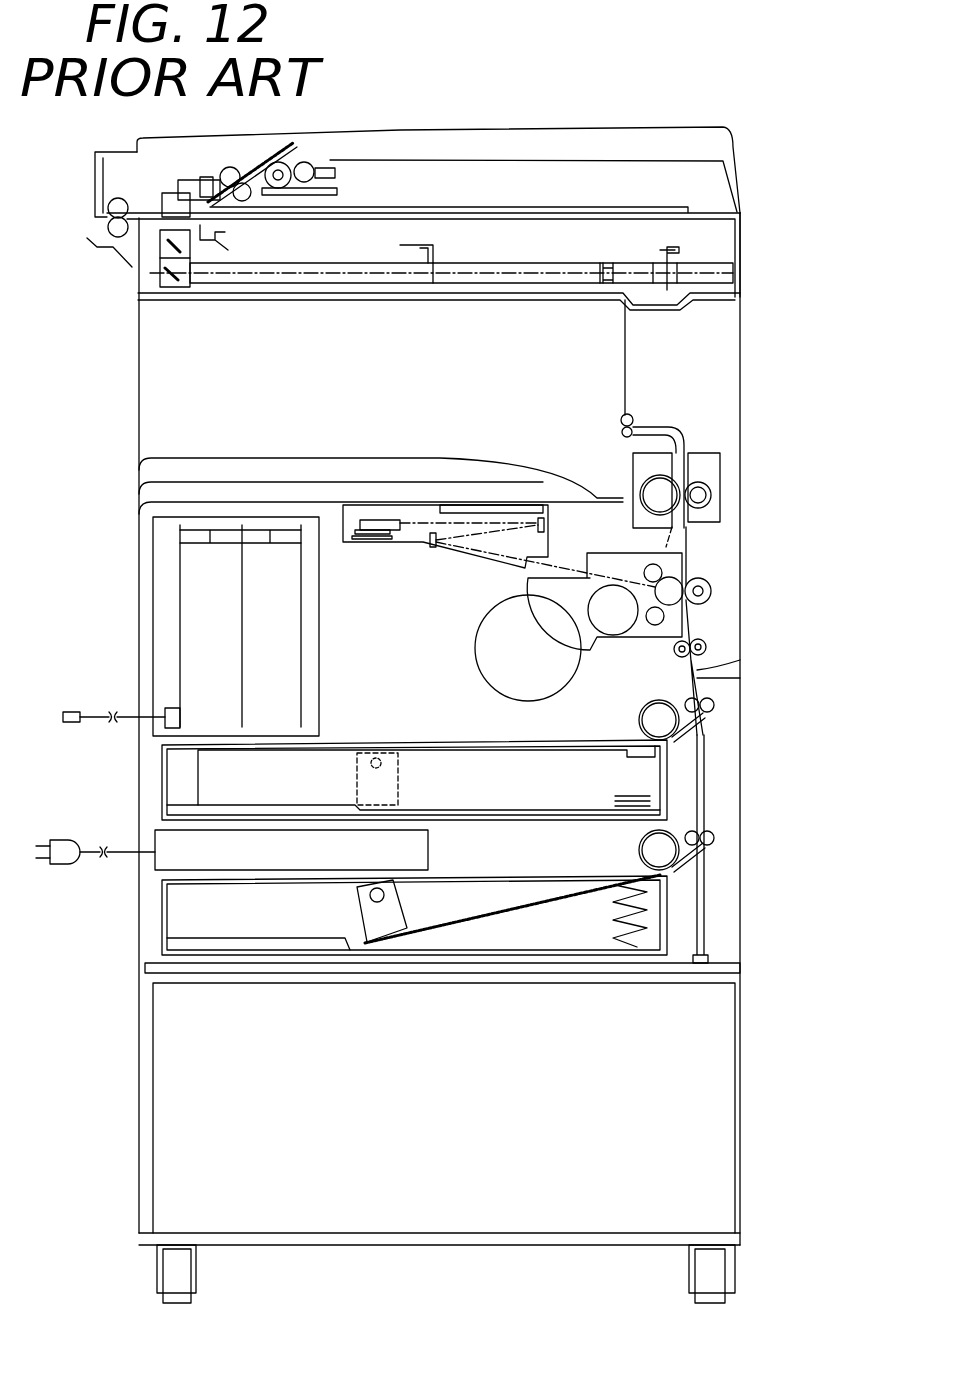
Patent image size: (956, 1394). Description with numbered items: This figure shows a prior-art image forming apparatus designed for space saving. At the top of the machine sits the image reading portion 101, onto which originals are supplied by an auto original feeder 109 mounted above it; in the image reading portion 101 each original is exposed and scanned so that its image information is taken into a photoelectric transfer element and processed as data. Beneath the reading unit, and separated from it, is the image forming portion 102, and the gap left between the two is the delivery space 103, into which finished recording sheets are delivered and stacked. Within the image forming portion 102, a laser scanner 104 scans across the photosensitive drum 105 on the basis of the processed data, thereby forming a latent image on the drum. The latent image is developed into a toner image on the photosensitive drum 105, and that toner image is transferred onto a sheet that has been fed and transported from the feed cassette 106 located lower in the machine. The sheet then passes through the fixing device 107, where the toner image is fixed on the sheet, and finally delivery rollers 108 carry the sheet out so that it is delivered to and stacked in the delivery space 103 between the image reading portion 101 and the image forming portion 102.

The image reading portion 101 is at (712, 238).
The image forming portion 102 is at (358, 642).
The space 103 is at (258, 380).
The laser scanner 104 is at (353, 520).
The photosensitive drum 105 is at (697, 568).
The feed cassette 106 is at (227, 790).
The fixing device 107 is at (708, 472).
The delivery rollers 108 is at (667, 425).
The auto original feeder (ADF) 109 is at (565, 140).